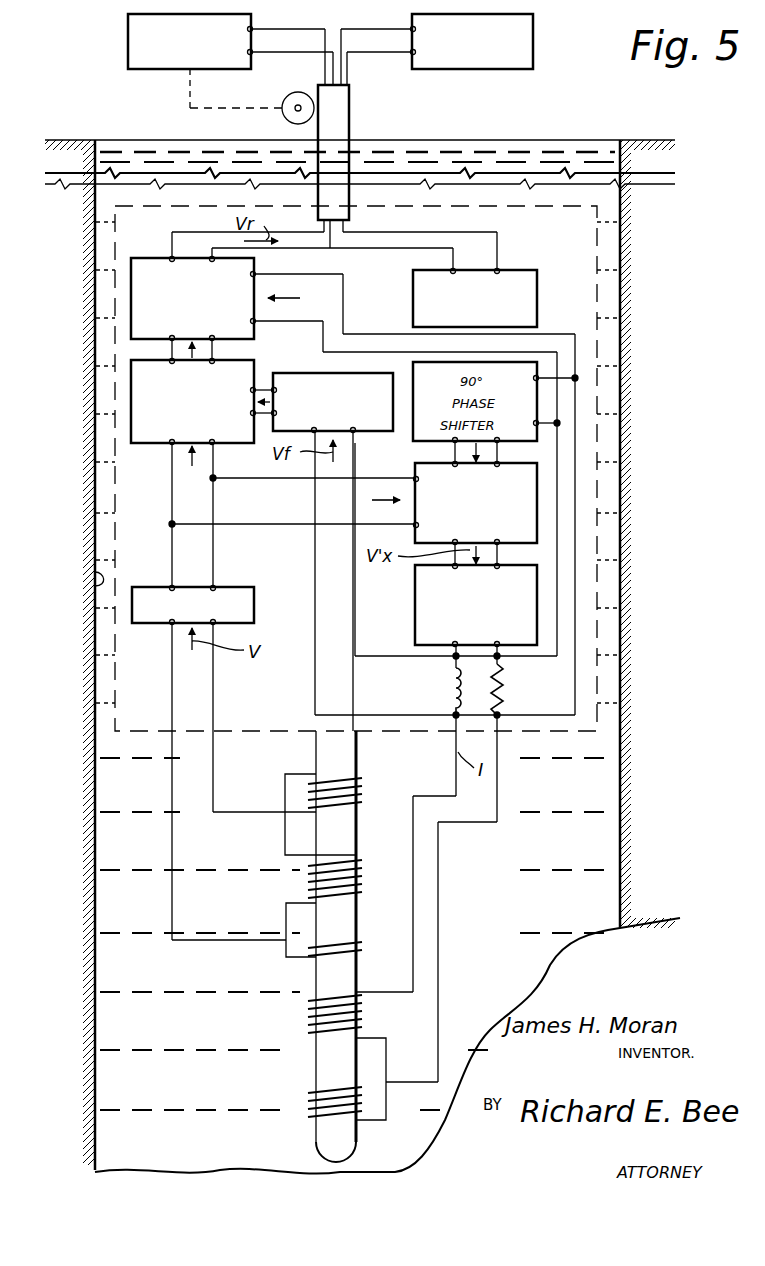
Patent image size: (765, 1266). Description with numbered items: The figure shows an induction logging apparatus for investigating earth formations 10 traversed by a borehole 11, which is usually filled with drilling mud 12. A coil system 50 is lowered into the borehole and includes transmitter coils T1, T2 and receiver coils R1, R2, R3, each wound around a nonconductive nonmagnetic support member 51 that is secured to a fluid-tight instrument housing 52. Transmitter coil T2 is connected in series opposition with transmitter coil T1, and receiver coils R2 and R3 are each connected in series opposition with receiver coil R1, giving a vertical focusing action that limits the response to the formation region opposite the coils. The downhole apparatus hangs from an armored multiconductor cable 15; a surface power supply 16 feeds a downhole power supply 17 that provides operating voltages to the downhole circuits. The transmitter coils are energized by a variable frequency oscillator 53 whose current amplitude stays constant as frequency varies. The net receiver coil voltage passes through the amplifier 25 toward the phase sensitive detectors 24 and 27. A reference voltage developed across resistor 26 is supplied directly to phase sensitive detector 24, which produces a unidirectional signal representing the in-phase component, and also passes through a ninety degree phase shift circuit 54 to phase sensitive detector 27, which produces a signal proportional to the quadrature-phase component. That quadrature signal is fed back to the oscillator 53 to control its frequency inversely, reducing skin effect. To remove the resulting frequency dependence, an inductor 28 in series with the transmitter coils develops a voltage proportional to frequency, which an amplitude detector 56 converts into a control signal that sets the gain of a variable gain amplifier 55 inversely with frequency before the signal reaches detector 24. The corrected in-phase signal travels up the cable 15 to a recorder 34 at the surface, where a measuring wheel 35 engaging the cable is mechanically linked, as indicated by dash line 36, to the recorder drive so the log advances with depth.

The earth formations 10 is at (58, 532).
The borehole 11 is at (95, 579).
The drilling mud 12 is at (432, 152).
The armored multiconductor cable 15 is at (350, 104).
The power supply 16 is at (470, 70).
The downhole power supply 17 is at (523, 268).
The phase sensitive detector 24 is at (148, 258).
The amplifier 25 is at (238, 588).
The resistor 26 is at (505, 686).
The phase sensitive detector 27 is at (500, 548).
The inductor 28 is at (450, 688).
The recorder 34 is at (128, 25).
The measuring wheel 35 is at (284, 100).
The dash line 36 is at (188, 90).
The coil system 50 is at (388, 820).
The support member 51 is at (345, 975).
The instrument housing 52 is at (250, 745).
The variable frequency oscillator 53 is at (413, 598).
The 90° phase shift circuit 54 is at (413, 440).
The variable gain amplifier 55 is at (155, 445).
The amplitude detector 56 is at (296, 373).
The receiver coil R1 is at (362, 874).
The receiver coil R2 is at (364, 792).
The receiver coil R3 is at (362, 946).
The transmitter coil T1 is at (308, 1017).
The transmitter coil T2 is at (308, 1104).